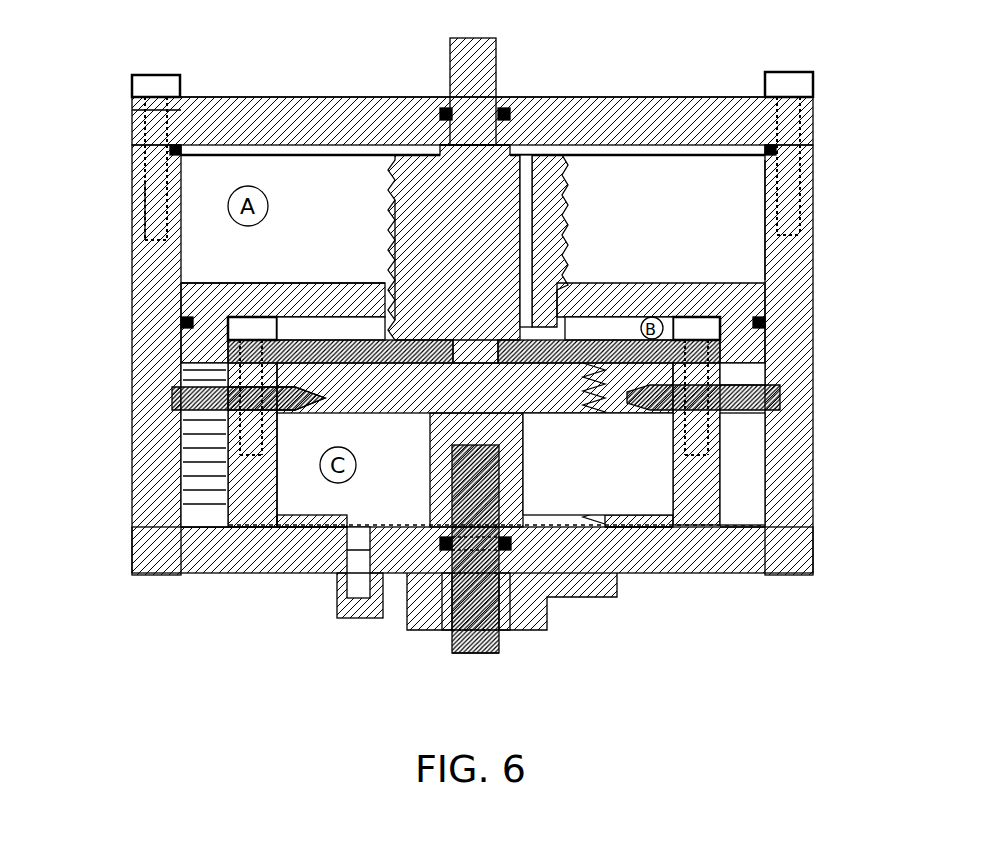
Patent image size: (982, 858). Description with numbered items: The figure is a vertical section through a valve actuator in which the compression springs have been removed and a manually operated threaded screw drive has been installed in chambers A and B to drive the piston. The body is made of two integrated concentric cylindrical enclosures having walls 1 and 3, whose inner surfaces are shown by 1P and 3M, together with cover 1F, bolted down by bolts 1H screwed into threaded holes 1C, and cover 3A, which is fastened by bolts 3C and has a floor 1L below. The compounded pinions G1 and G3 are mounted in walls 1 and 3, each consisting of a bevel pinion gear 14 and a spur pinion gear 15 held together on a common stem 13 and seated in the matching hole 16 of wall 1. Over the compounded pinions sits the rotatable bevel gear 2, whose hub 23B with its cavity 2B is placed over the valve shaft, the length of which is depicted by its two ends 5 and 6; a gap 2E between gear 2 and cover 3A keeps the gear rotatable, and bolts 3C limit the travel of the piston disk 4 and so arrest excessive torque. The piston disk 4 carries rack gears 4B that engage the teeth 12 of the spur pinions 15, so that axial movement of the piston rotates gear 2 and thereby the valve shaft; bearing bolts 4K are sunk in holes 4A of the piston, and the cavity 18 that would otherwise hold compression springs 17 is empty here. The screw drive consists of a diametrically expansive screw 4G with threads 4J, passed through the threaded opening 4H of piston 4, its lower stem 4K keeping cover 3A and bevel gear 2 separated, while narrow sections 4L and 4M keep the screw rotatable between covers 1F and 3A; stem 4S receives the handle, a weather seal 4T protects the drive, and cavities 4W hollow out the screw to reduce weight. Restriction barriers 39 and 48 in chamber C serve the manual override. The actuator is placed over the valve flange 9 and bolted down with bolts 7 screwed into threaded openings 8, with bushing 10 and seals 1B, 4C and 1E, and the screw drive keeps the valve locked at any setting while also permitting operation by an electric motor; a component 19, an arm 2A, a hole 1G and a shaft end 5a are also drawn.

The wall 1 is at (185, 575).
The seal 1B is at (778, 152).
The threaded hole 1C is at (150, 195).
The seal 1E is at (512, 543).
The cover 1F is at (660, 97).
The bolt hole 1G is at (132, 112).
The bolt 1H is at (160, 75).
The floor 1L is at (735, 530).
The inner surface 1P is at (765, 245).
The bevel gear 2 is at (357, 412).
The arm 2A is at (655, 400).
The cavity 2B is at (500, 512).
The gap 2E is at (575, 345).
The wall 3 is at (695, 500).
The cover 3A is at (310, 283).
The bolt 3C is at (252, 284).
The inner surface 3M is at (598, 464).
The piston disk 4 is at (305, 290).
The hole 4A is at (745, 360).
The rack gear 4B is at (200, 515).
The seal 4C is at (181, 320).
The screw 4G is at (410, 190).
The threaded opening 4H is at (385, 285).
The threads 4J is at (560, 205).
The lower stem 4K is at (478, 355).
The narrow section 4L is at (385, 330).
The narrow section 4M is at (440, 147).
The stem 4S is at (470, 68).
The weather seal 4T is at (510, 117).
The cavity 4W is at (528, 258).
The shaft end 5 is at (488, 653).
The shaft end 5a is at (470, 655).
The shaft end 6 is at (450, 437).
The bolt 7 is at (360, 620).
The threaded opening 8 is at (352, 560).
The flange 9 is at (620, 593).
The bushing 10 is at (443, 605).
The teeth 12 is at (181, 390).
The stem 13 is at (258, 425).
The bevel pinion gear 14 is at (298, 418).
The spur pinion gear 15 is at (232, 395).
The hole 16 is at (205, 395).
The compression spring 17 is at (640, 350).
The cavity 18 is at (740, 470).
The passage 19 is at (345, 530).
The hub 23B is at (430, 470).
The restriction barrier 39 is at (295, 560).
The restriction barrier 48 is at (640, 520).
The compounded pinion G1 is at (610, 470).
The compounded pinion G3 is at (200, 480).